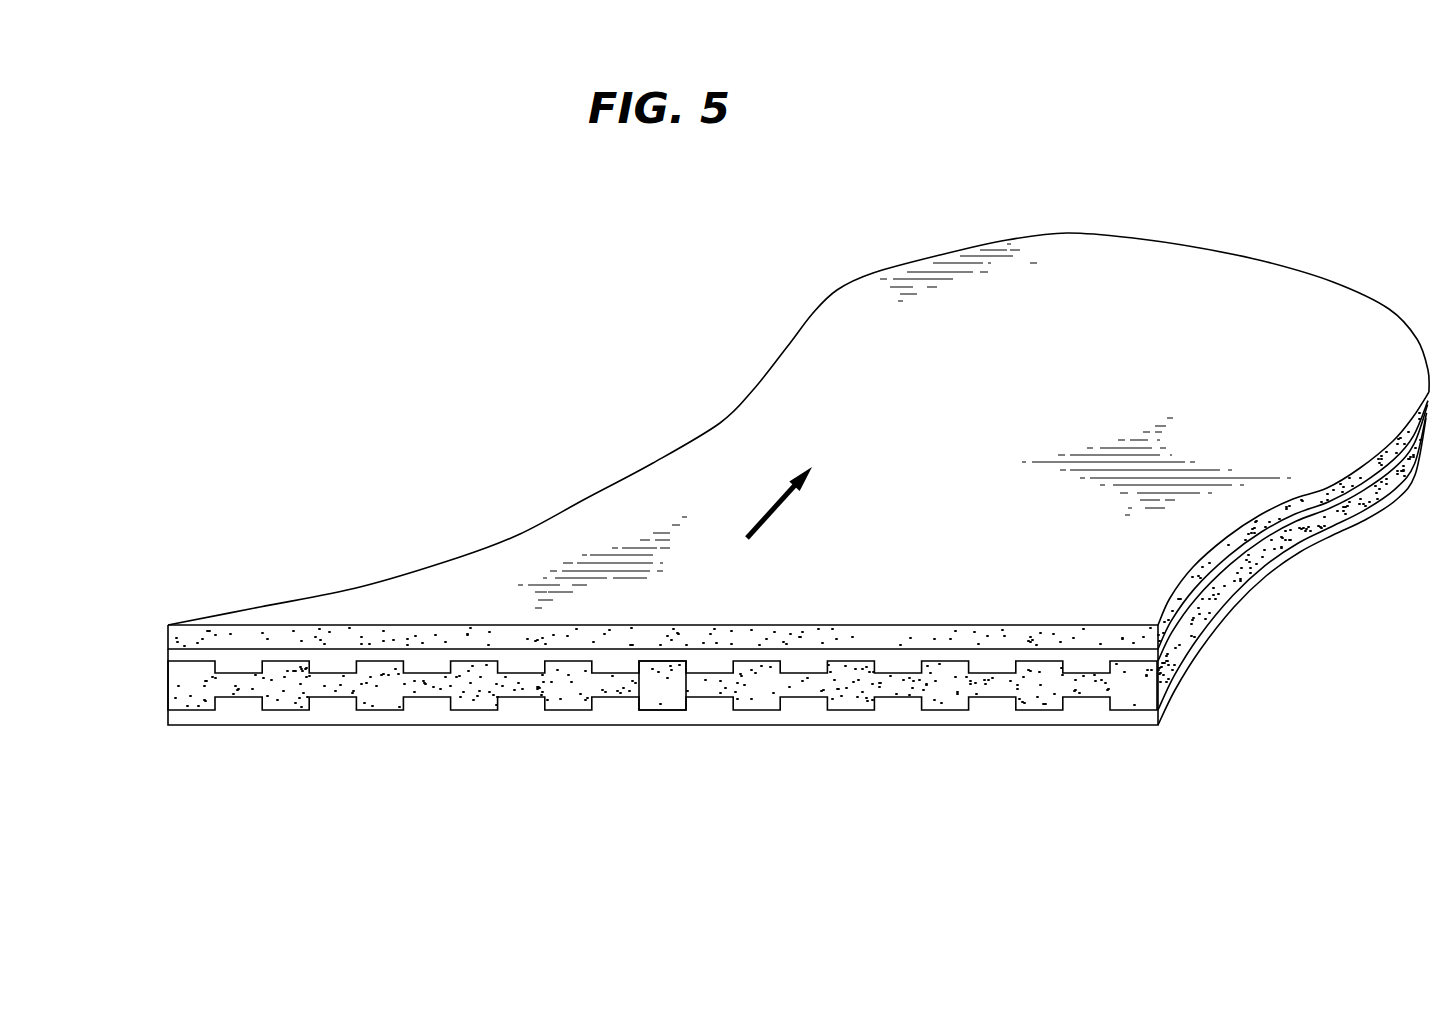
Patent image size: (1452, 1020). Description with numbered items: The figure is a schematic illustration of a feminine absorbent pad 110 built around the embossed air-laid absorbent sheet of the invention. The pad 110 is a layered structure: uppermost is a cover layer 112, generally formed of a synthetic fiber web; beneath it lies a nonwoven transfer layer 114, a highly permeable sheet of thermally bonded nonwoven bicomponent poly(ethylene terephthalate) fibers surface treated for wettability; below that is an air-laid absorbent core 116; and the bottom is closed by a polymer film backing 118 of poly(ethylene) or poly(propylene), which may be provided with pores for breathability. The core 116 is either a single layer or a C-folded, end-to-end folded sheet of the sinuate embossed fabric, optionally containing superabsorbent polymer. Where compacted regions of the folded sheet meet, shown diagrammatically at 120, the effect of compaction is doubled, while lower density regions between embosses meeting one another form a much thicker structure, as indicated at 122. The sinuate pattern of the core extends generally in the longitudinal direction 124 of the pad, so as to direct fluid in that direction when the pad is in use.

The pad 110 is at (667, 344).
The cover layer 112 is at (202, 622).
The nonwoven transfer layer 114 is at (185, 635).
The air-laid absorbent core 116 is at (1305, 520).
The polymer film backing 118 is at (1195, 653).
The meeting compacted regions 120 is at (611, 697).
The thicker lower density structure 122 is at (656, 711).
The longitudinal direction 124 is at (757, 518).